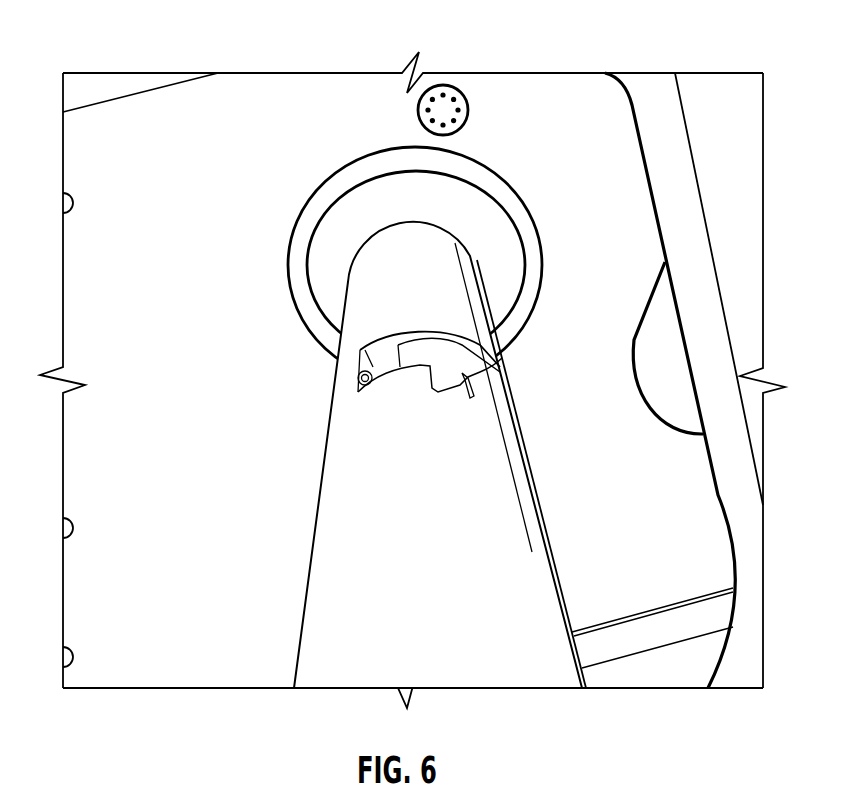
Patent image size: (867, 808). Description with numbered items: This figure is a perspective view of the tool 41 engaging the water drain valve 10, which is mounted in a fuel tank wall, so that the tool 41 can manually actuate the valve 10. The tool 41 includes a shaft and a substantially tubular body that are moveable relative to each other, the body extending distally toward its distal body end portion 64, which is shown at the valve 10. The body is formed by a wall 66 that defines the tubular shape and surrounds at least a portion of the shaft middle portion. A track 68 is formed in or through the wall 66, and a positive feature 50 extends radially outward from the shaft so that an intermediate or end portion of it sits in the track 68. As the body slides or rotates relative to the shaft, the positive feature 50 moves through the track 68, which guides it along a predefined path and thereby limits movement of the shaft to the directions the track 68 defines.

The water drain valve 10 is at (452, 205).
The tool 41 is at (503, 487).
The positive feature 50 is at (362, 380).
The distal body end portion 64 is at (459, 242).
The wall 66 is at (492, 437).
The track 68 is at (454, 376).